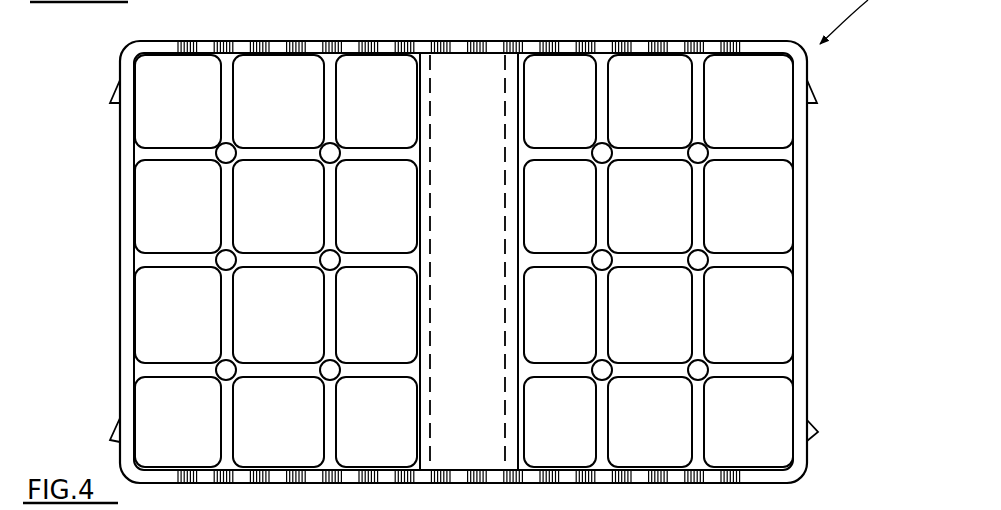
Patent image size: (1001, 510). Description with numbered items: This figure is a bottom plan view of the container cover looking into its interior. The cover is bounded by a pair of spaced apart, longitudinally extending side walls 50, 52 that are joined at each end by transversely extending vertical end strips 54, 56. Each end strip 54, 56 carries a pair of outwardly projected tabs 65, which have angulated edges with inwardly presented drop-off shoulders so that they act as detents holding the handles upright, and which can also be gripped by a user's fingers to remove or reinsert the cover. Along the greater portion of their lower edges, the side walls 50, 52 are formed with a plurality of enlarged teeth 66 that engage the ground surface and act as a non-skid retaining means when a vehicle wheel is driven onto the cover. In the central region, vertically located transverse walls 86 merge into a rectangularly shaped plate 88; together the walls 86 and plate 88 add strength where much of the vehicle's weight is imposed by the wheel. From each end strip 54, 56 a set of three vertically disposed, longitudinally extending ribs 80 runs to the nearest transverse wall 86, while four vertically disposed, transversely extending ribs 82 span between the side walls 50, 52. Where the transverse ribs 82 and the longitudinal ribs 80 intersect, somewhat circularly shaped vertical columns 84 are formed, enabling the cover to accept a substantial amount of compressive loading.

The side wall 50 is at (464, 484).
The side wall 52 is at (468, 42).
The end strip 54 is at (120, 262).
The end strip 56 is at (807, 227).
The tabs 65 is at (112, 99).
The teeth 66 is at (482, 53).
The longitudinally extending ribs 80 is at (272, 262).
The transversely extending ribs 82 is at (327, 90).
The columns 84 is at (330, 156).
The transverse walls 86 is at (515, 55).
The plate 88 is at (495, 259).